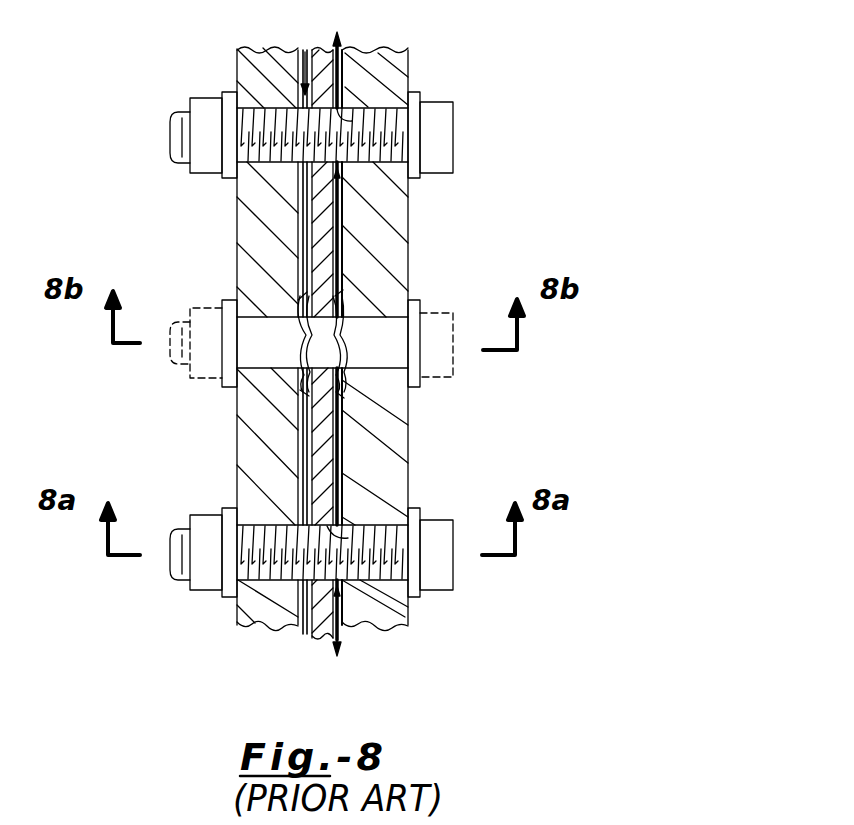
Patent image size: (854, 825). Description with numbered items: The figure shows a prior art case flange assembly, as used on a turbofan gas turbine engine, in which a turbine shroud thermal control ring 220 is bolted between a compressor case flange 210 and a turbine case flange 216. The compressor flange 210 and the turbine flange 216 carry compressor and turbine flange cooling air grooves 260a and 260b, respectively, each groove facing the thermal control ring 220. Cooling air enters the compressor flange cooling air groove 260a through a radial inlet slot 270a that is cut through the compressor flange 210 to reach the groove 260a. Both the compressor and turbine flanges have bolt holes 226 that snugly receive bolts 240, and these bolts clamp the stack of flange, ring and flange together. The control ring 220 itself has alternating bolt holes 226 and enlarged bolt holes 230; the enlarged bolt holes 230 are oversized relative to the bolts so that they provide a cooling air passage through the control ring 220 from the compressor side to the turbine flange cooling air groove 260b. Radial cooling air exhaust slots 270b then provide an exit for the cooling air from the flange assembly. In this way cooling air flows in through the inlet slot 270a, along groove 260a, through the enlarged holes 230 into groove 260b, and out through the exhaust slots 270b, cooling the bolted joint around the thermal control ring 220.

The compressor case flange 210 is at (275, 630).
The turbine case flange 216 is at (408, 432).
The turbine shroud thermal control ring 220 is at (322, 639).
The bolt holes 226 is at (373, 360).
The enlarged bolt holes 230 is at (345, 100).
The bolts 240 is at (453, 570).
The compressor flange cooling air groove 260a is at (300, 452).
The turbine flange cooling air groove 260b is at (345, 440).
The radial inlet slot 270a is at (300, 355).
The radial cooling air exhaust slots 270b is at (356, 300).